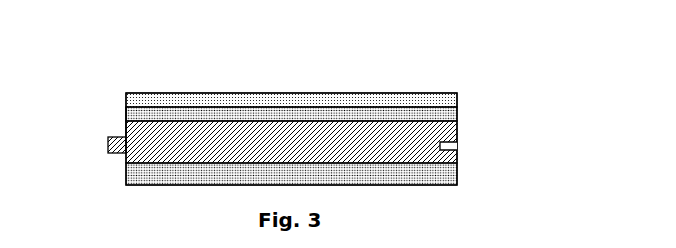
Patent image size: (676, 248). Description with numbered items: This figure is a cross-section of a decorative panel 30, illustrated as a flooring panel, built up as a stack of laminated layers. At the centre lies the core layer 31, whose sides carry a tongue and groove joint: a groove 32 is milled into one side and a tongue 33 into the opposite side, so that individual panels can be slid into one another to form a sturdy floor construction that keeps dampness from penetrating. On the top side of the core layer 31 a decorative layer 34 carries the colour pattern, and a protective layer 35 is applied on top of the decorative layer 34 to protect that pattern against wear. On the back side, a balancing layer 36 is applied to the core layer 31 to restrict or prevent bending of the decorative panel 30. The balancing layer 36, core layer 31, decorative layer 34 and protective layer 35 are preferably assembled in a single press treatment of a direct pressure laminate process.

The decorative panel 30 is at (217, 86).
The core layer 31 is at (125, 126).
The groove 32 is at (441, 146).
The tongue 33 is at (110, 152).
The decorative layer 34 is at (458, 117).
The protective layer 35 is at (443, 103).
The balancing layer 36 is at (443, 175).